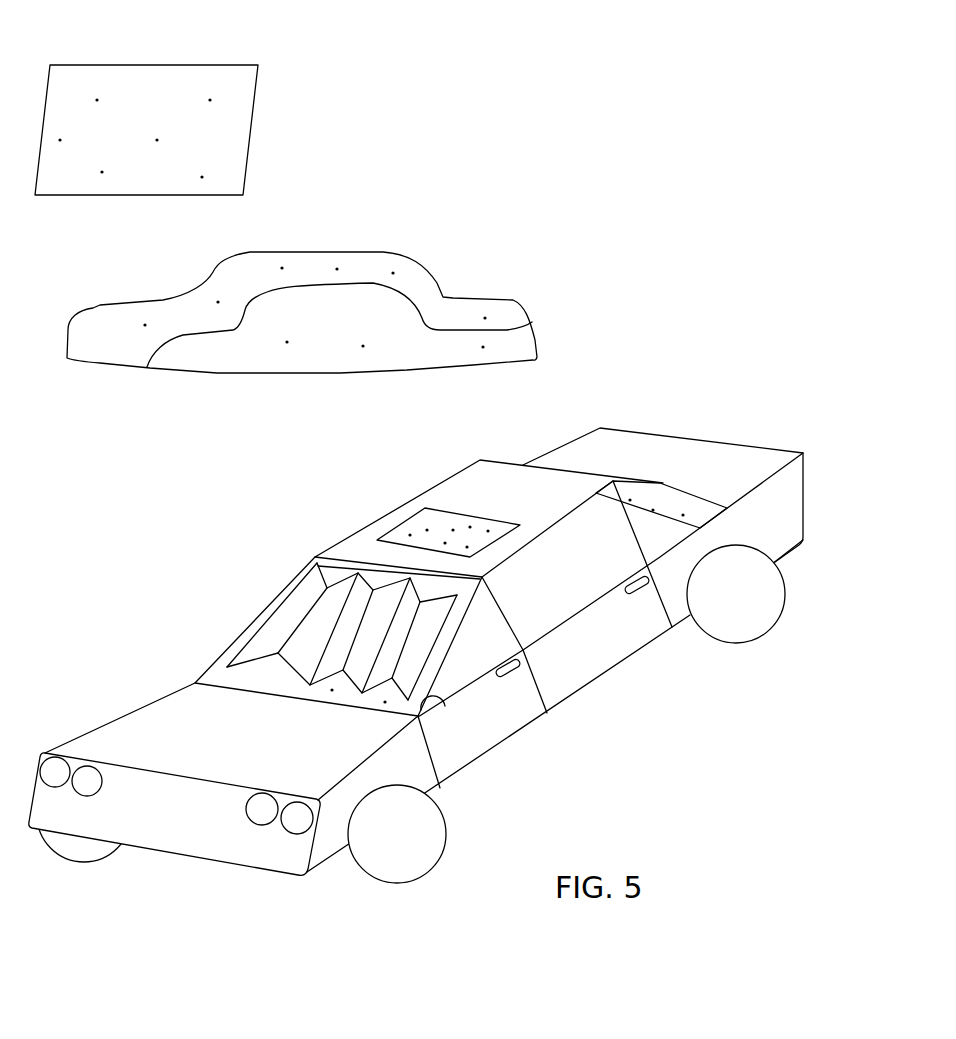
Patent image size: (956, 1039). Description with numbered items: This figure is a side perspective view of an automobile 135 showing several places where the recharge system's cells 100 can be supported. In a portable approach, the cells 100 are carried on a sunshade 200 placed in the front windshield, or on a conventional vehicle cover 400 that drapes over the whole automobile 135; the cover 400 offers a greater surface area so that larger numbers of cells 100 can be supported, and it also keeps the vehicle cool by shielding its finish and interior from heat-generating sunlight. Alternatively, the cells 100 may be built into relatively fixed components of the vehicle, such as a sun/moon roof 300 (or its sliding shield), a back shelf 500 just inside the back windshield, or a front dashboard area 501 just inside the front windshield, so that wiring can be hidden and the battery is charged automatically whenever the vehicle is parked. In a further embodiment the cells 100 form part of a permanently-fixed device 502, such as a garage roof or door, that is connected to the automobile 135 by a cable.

The cells 100 is at (384, 377).
The automobile 135 is at (803, 512).
The sunshade 200 is at (280, 615).
The sun/moon roof 300 is at (503, 522).
The vehicle cover 400 is at (537, 337).
The back shelf 500 is at (660, 518).
The front dashboard area 501 is at (445, 706).
The permanently-fixed device 502 is at (163, 63).